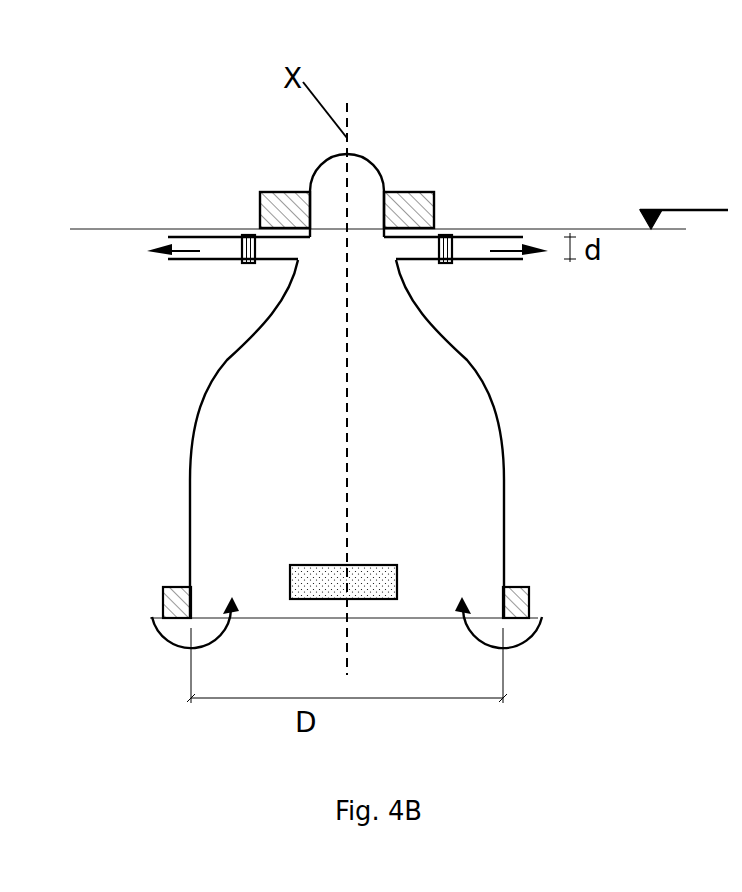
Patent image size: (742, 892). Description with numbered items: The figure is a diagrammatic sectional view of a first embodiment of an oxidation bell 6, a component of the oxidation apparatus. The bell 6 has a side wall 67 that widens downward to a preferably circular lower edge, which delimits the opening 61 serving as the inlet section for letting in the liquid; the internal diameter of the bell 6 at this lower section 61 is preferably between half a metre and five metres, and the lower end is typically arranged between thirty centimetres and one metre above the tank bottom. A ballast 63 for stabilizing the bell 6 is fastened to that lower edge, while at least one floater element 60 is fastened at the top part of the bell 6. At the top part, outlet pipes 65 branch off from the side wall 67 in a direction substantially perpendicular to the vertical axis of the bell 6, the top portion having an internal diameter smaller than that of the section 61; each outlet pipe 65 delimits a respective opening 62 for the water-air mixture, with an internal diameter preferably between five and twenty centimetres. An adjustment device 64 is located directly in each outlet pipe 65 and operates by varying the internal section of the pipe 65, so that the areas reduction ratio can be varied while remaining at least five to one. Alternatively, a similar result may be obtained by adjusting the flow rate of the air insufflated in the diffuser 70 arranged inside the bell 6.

The oxidation bell 6 is at (406, 121).
The floater element 60 is at (282, 199).
The opening 61 is at (270, 617).
The opening 62 is at (173, 239).
The ballast 63 is at (521, 597).
The adjustment device 64 is at (243, 235).
The outlet pipe 65 is at (215, 261).
The side wall 67 is at (200, 402).
The diffuser 70 is at (378, 580).